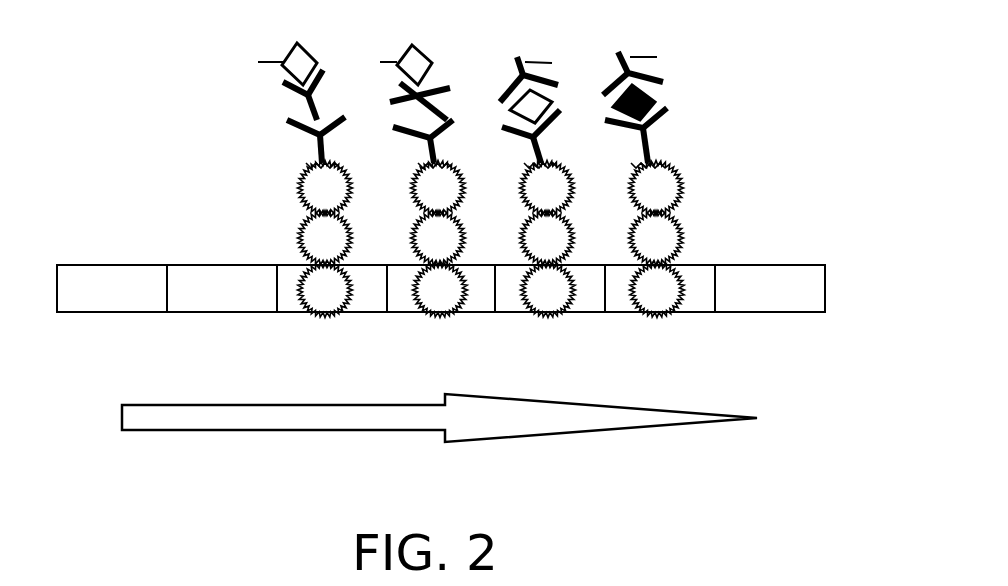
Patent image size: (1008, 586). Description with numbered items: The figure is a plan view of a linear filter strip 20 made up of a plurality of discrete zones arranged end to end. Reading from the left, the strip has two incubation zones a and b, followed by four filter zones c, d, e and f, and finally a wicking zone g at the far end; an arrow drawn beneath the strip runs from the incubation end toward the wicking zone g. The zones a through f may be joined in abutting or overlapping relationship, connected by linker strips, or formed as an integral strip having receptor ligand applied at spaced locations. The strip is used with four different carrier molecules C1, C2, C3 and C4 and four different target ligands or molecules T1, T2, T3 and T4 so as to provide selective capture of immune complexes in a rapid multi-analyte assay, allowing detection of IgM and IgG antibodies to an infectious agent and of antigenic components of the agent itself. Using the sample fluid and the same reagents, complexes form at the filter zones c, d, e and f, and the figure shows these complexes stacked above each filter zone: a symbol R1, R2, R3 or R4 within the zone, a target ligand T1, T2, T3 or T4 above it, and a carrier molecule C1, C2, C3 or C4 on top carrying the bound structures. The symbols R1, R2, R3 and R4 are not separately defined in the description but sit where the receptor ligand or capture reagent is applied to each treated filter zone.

The linear filter strip 20 is at (762, 165).
The incubation zone a is at (112, 316).
The incubation zone b is at (222, 316).
The filter zone c is at (332, 316).
The filter zone d is at (441, 316).
The filter zone e is at (550, 316).
The filter zone f is at (660, 316).
The wicking zone g is at (770, 316).
The carrier molecule C1 is at (325, 188).
The target ligand T1 is at (325, 238).
The receptor 1 R1 is at (325, 290).
The carrier molecule C2 is at (438, 188).
The target ligand T2 is at (438, 238).
The receptor 2 R2 is at (440, 290).
The carrier molecule C3 is at (547, 188).
The target ligand T3 is at (547, 238).
The receptor 3 R3 is at (548, 290).
The carrier molecule C4 is at (656, 188).
The target ligand T4 is at (656, 238).
The receptor 4 R4 is at (657, 290).